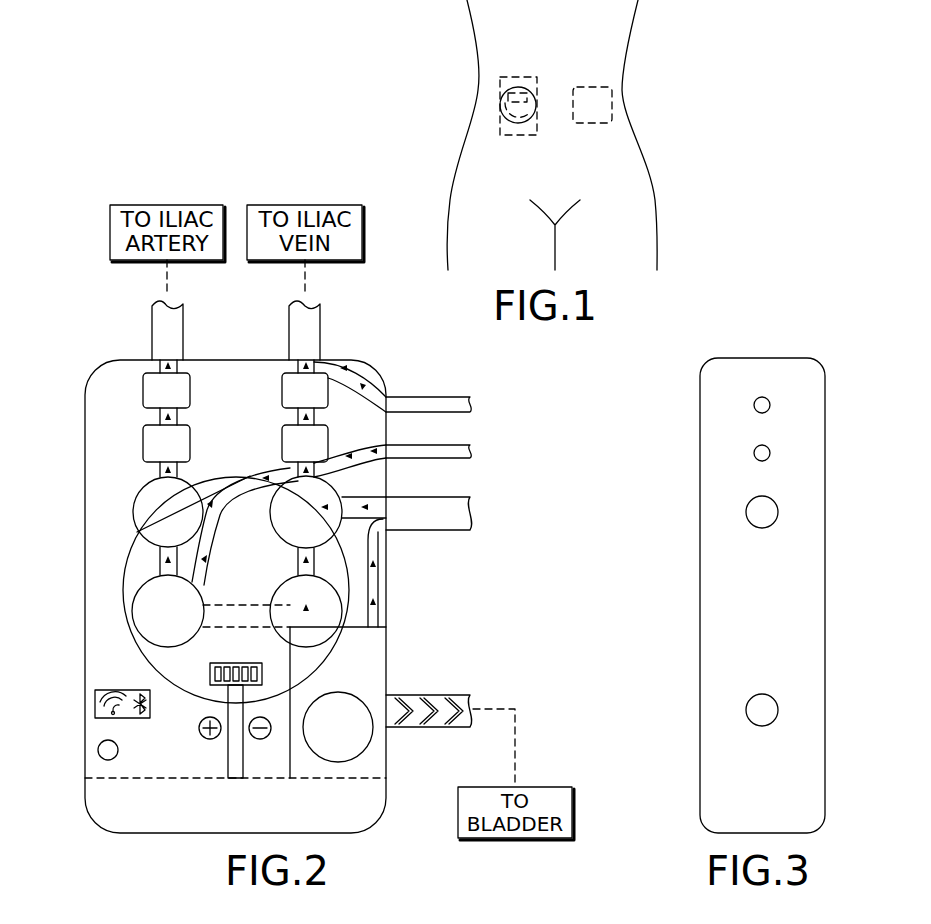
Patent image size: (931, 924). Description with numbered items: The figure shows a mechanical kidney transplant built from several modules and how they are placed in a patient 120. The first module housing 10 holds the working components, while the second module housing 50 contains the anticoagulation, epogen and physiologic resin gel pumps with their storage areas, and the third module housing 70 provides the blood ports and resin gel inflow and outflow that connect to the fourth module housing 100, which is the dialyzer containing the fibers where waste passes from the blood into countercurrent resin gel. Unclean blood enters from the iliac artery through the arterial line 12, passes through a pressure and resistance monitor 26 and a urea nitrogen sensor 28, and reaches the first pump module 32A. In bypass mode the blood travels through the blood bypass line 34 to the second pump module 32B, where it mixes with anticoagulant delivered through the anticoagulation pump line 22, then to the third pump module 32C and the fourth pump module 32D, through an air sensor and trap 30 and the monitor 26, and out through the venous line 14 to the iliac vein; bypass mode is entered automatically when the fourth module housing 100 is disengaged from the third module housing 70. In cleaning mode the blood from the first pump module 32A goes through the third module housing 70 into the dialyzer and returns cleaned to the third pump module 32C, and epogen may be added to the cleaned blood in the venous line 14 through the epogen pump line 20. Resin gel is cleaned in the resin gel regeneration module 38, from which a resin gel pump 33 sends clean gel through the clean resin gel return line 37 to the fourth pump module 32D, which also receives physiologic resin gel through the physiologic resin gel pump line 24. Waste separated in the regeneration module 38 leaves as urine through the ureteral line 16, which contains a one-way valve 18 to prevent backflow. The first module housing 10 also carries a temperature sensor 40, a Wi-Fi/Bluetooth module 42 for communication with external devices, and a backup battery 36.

In FIG. 1, the first module housing 10 is at (535, 78).
In FIG. 2, the first module housing 10 is at (88, 410).
In FIG. 3, the first module housing 10 is at (712, 410).
In FIG. 2, the arterial line 12 is at (158, 337).
In FIG. 2, the venous line 14 is at (300, 337).
In FIG. 2, the ureteral line 16 is at (441, 695).
In FIG. 3, the ureteral line 16 is at (765, 726).
In FIG. 2, the one-way valve 18 is at (433, 720).
In FIG. 2, the epogen pump line 20 is at (467, 390).
In FIG. 3, the epogen pump line 20 is at (765, 413).
In FIG. 2, the anticoagulation pump line 22 is at (467, 440).
In FIG. 3, the anticoagulation pump line 22 is at (760, 462).
In FIG. 2, the physiologic resin gel pump line 24 is at (467, 530).
In FIG. 3, the physiologic resin gel pump line 24 is at (763, 528).
In FIG. 2, the pressure and resistance monitor 26 is at (282, 378).
In FIG. 2, the urea nitrogen sensor 28 is at (190, 438).
In FIG. 2, the air sensor and trap 30 is at (282, 432).
In FIG. 2, the first pump module 32A is at (137, 507).
In FIG. 2, the second pump module 32B is at (140, 620).
In FIG. 2, the third pump module 32C is at (303, 643).
In FIG. 2, the fourth pump module 32D is at (330, 490).
In FIG. 2, the resin gel pump 33 is at (338, 758).
In FIG. 2, the blood bypass line 34 is at (214, 628).
In FIG. 2, the backup battery 36 is at (188, 782).
In FIG. 2, the clean resin gel return line 37 is at (382, 580).
In FIG. 2, the resin gel regeneration module 38 is at (386, 645).
In FIG. 2, the temperature sensor 40 is at (117, 752).
In FIG. 2, the Wi-Fi/Bluetooth module 42 is at (95, 708).
In FIG. 1, the second module housing 50 is at (612, 100).
In FIG. 1, the third module housing 70 is at (523, 140).
In FIG. 1, the fourth module housing 100 is at (500, 108).
In FIG. 1, the patient 120 is at (620, 42).